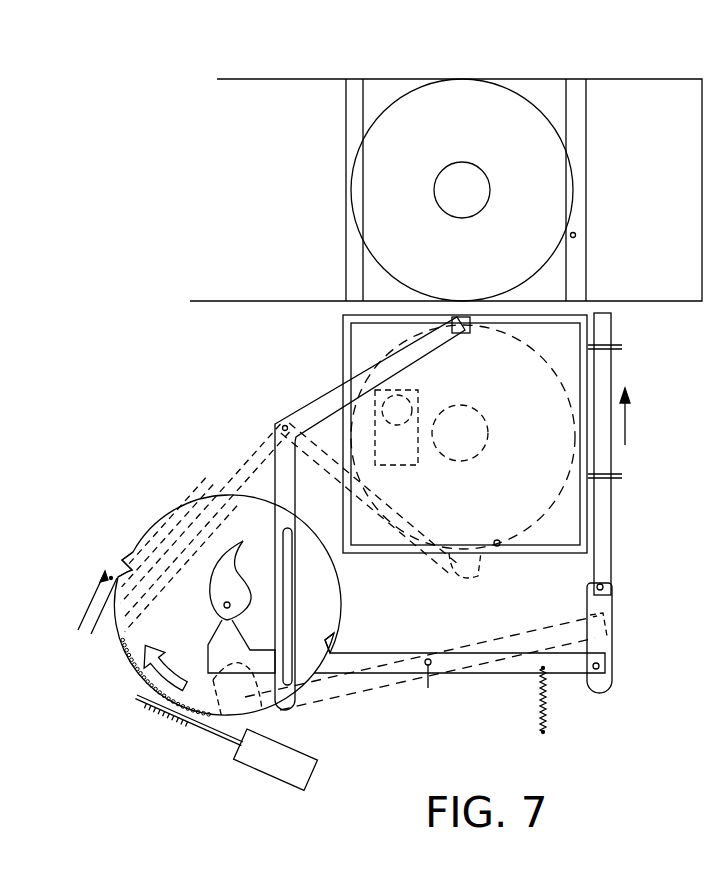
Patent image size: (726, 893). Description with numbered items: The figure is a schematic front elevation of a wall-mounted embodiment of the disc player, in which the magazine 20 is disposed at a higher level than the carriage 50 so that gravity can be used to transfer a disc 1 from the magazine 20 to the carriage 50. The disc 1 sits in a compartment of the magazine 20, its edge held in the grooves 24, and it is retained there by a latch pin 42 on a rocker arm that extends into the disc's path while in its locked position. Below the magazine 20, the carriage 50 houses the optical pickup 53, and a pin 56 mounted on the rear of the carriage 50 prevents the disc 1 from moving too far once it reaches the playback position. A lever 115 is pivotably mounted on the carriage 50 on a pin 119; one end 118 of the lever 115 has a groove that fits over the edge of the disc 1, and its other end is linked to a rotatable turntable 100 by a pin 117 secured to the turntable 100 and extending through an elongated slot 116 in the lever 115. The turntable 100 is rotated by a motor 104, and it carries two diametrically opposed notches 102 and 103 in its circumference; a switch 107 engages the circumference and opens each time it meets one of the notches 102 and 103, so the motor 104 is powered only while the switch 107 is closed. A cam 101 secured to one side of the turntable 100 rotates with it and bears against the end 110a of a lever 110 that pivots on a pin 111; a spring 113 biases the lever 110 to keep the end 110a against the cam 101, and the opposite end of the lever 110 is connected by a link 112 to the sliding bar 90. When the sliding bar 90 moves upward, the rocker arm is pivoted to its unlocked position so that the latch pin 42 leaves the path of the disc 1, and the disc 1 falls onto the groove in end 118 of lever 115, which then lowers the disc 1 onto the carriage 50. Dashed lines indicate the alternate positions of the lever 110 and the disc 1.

The disc 1 is at (377, 163).
The magazine 20 is at (290, 88).
The grooves 24 is at (353, 272).
The latch pin 42 is at (578, 235).
The carriage 50 is at (343, 346).
The optical pickup 53 is at (405, 472).
The pin 56 is at (499, 546).
The sliding bar 90 is at (606, 508).
The turntable 100 is at (172, 532).
The cam 101 is at (228, 572).
The notch 102 is at (132, 556).
The notch 103 is at (335, 641).
The motor 104 is at (305, 770).
The switch 107 is at (96, 610).
The lever 110 is at (518, 675).
The end of lever 110a is at (262, 716).
The pin 111 is at (434, 686).
The link 112 is at (612, 648).
The spring 113 is at (553, 712).
The lever 115 is at (291, 415).
The elongated slot 116 is at (294, 598).
The pin 117 is at (288, 650).
The end of lever 118 is at (469, 334).
The pin 119 is at (281, 424).